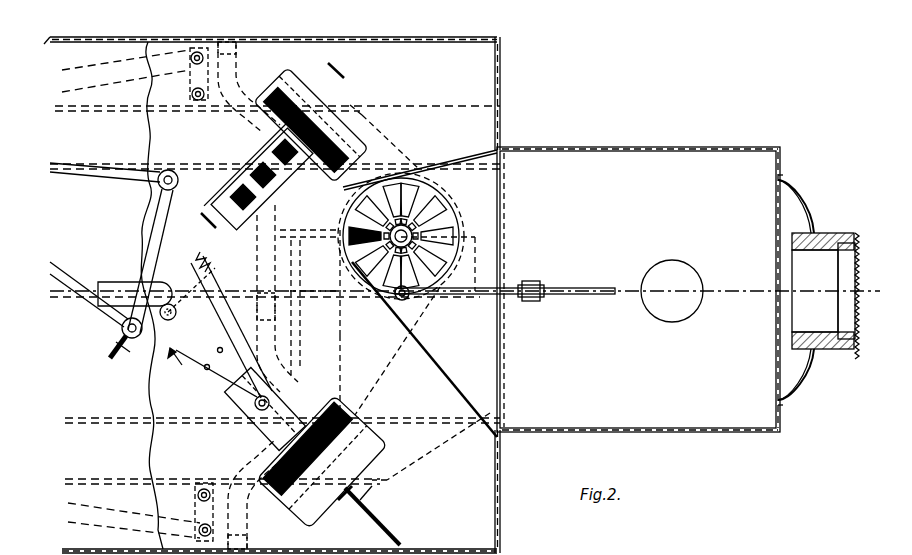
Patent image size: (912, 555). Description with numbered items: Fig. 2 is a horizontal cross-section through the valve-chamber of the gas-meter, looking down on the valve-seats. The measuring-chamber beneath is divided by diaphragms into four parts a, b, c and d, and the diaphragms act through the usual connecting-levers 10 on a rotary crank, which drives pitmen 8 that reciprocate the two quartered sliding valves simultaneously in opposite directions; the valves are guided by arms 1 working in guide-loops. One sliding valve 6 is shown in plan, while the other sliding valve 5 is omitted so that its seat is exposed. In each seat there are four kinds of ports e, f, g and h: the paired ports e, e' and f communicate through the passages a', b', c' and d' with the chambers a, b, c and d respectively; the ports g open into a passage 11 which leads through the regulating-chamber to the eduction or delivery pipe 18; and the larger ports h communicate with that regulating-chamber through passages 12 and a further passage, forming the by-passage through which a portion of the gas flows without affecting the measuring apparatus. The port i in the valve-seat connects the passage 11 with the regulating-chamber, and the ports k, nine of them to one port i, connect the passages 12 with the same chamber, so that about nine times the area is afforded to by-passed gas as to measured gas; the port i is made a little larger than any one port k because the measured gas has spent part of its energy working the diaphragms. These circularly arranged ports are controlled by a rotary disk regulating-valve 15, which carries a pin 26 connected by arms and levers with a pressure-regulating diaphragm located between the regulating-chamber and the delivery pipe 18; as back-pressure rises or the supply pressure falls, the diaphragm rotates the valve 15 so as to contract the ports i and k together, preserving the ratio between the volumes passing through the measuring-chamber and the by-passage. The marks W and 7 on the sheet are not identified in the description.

The measuring-chamber part d is at (135, 74).
The measuring-chamber part b is at (140, 512).
The passage c' is at (249, 87).
The passage b' is at (264, 298).
The passage d' is at (259, 494).
The port h is at (340, 150).
The port e is at (260, 177).
The lower heating coil element e' is at (224, 419).
The port g is at (255, 165).
The port f is at (290, 180).
The coil terminal 7 is at (225, 137).
The sliding valve 6 is at (300, 415).
The arm 1 is at (390, 486).
The wire W is at (294, 440).
The port k is at (465, 208).
The port i is at (342, 257).
The pin 26 is at (404, 302).
The regulating-valve 15 is at (345, 300).
The passage 12 is at (380, 168).
The passage 11 is at (290, 356).
The eduction or delivery pipe 18 is at (818, 290).
The connecting-lever 10 is at (98, 168).
The measuring-chamber part c is at (132, 261).
The measuring-chamber part a is at (112, 348).
The pitman 8 is at (198, 278).
The passage a' is at (244, 326).
The sliding valve 5 is at (110, 482).